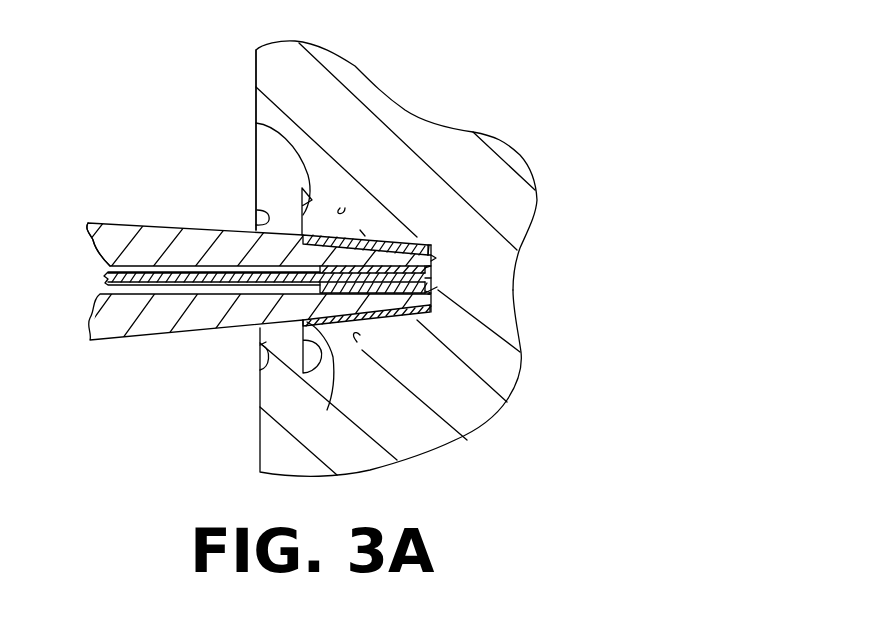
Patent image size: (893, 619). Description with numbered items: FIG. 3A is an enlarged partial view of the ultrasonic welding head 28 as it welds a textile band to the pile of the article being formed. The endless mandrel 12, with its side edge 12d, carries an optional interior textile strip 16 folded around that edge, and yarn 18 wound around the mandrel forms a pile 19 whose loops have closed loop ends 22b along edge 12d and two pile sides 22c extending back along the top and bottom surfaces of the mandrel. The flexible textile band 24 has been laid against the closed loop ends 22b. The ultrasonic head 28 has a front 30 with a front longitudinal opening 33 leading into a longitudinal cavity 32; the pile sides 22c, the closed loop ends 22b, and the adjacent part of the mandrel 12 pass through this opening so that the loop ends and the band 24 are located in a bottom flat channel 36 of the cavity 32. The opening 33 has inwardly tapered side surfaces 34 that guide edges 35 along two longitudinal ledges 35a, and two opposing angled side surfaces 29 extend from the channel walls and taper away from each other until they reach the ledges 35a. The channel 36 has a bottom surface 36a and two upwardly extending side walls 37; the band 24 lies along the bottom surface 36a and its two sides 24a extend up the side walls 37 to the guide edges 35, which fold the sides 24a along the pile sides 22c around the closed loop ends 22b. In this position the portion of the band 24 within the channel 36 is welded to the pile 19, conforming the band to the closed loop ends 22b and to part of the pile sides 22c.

The mandrel 12 is at (107, 278).
The side edge of mandrel 12d is at (437, 290).
The interior textile strip 16 is at (383, 306).
The yarn 18 is at (168, 237).
The pile 19 is at (120, 233).
The closed loop ends 22b is at (437, 285).
The pile sides 22c is at (173, 228).
The flexible textile band 24 is at (440, 284).
The sides of band 24a is at (303, 235).
The ultrasonic head 28 is at (353, 66).
The angled side surfaces 29 is at (340, 208).
The front of ultrasonic head 30 is at (256, 87).
The longitudinal cavity 32 is at (360, 230).
The front longitudinal opening 33 is at (260, 345).
The inwardly tapered side surfaces 34 is at (257, 210).
The guide edges 35 is at (300, 233).
The longitudinal ledges 35a is at (257, 123).
The bottom flat channel 36 is at (436, 258).
The bottom surface of channel 36a is at (436, 258).
The side walls 37 is at (429, 245).